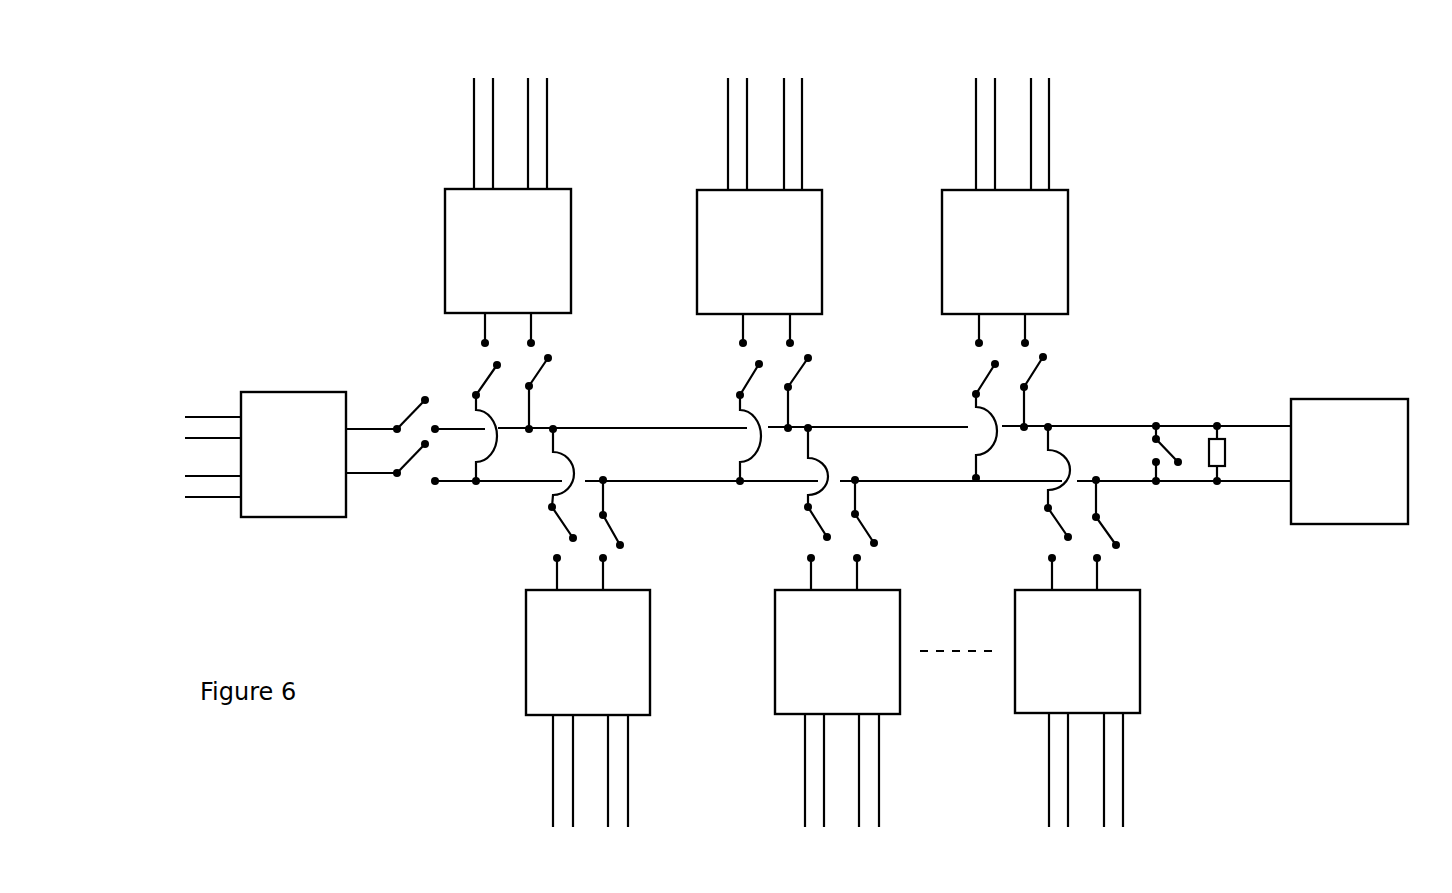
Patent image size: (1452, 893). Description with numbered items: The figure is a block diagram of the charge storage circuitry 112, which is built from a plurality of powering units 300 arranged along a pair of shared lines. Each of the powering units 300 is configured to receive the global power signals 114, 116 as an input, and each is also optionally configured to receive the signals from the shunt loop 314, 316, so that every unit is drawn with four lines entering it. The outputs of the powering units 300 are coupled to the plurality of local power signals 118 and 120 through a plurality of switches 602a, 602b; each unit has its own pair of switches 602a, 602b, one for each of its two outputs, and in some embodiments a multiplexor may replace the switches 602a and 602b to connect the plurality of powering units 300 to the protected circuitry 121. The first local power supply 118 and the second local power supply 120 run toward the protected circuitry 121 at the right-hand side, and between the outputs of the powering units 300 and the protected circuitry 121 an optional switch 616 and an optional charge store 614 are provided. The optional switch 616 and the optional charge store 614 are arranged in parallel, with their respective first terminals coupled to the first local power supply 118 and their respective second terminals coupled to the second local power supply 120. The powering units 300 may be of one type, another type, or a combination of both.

The charge storage circuitry 112 is at (1199, 245).
The global power signal 114 is at (463, 98).
The global power signal 116 is at (488, 142).
The first local power supply 118 is at (1274, 429).
The second local power supply 120 is at (1249, 491).
The protected circuitry 121 is at (1412, 446).
The powering unit 300 is at (690, 452).
The shunt loop signal 314 is at (535, 128).
The shunt loop signal 316 is at (555, 147).
The switch 602a is at (1062, 520).
The switch 602b is at (412, 477).
The optional charge store 614 is at (1234, 470).
The optional switch 616 is at (1165, 440).